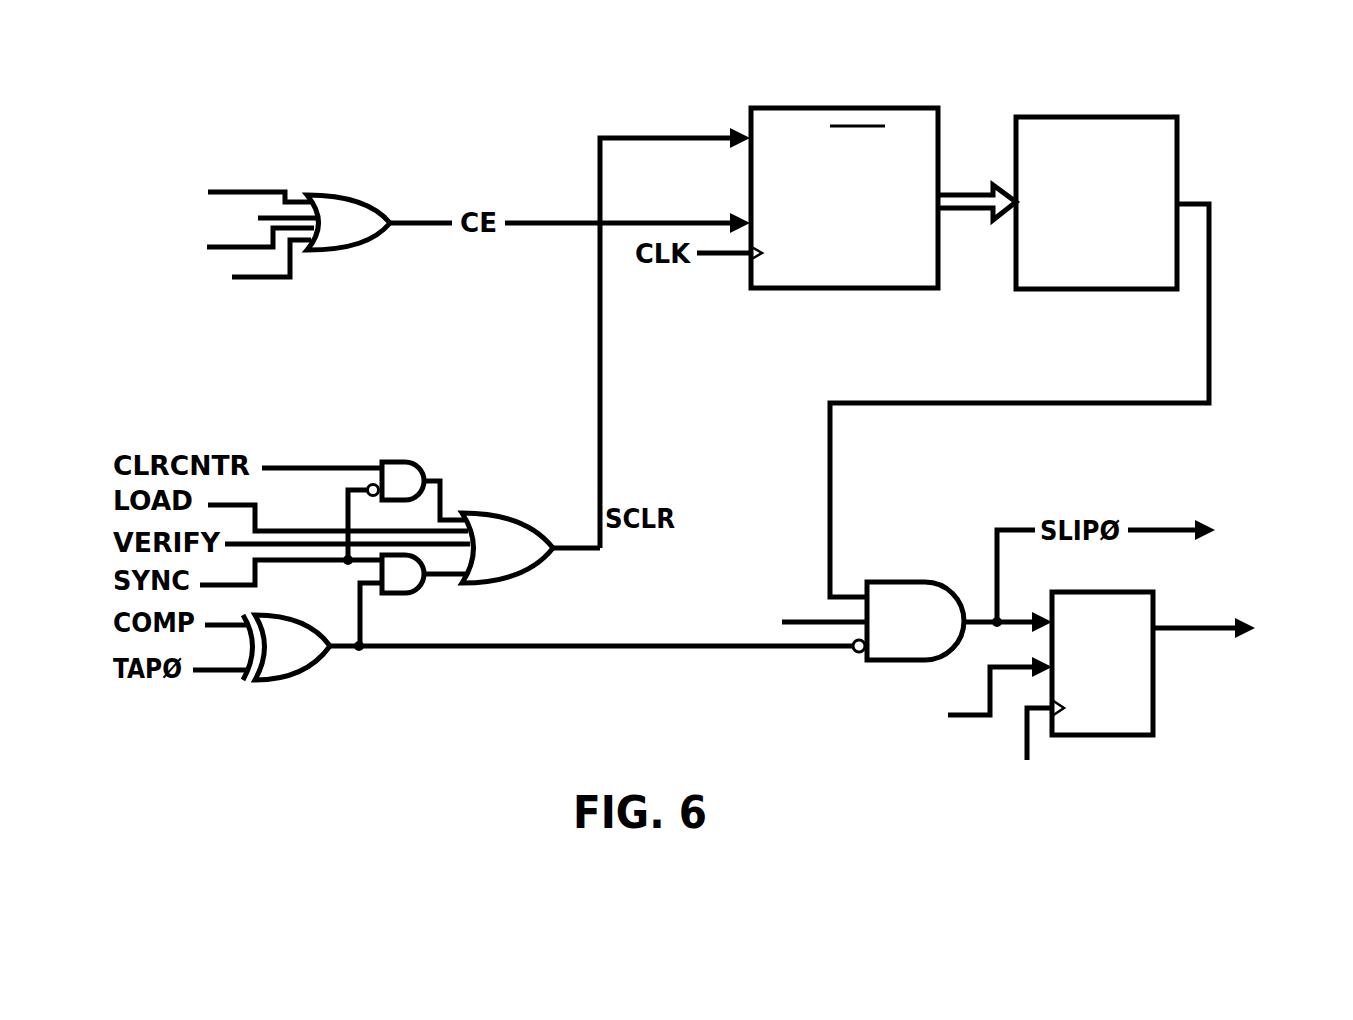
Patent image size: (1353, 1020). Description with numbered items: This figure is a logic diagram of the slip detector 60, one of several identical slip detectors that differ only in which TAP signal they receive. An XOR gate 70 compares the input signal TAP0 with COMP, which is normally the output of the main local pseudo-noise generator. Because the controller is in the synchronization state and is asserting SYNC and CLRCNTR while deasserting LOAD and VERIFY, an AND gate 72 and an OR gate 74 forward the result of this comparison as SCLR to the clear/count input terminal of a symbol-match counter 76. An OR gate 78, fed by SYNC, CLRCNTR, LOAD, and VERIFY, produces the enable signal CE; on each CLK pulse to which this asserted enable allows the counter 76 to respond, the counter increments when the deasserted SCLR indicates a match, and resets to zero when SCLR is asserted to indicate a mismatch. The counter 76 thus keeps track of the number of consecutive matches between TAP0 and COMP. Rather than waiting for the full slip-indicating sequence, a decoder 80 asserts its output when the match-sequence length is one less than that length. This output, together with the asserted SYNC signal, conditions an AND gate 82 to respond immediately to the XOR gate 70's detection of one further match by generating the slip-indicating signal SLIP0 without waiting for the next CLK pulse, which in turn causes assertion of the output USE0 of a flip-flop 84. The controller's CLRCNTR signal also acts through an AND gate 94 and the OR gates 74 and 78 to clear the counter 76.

The slip detector 60 is at (1270, 94).
The XOR gate 70 is at (297, 680).
The AND gate 72 is at (400, 594).
The OR gate 74 is at (510, 578).
The symbol-match counter 76 is at (842, 108).
The OR gate 78 is at (357, 195).
The decoder 80 is at (1085, 117).
The AND gate 82 is at (915, 582).
The flip-flop 84 is at (1153, 705).
The AND gate 94 is at (400, 462).